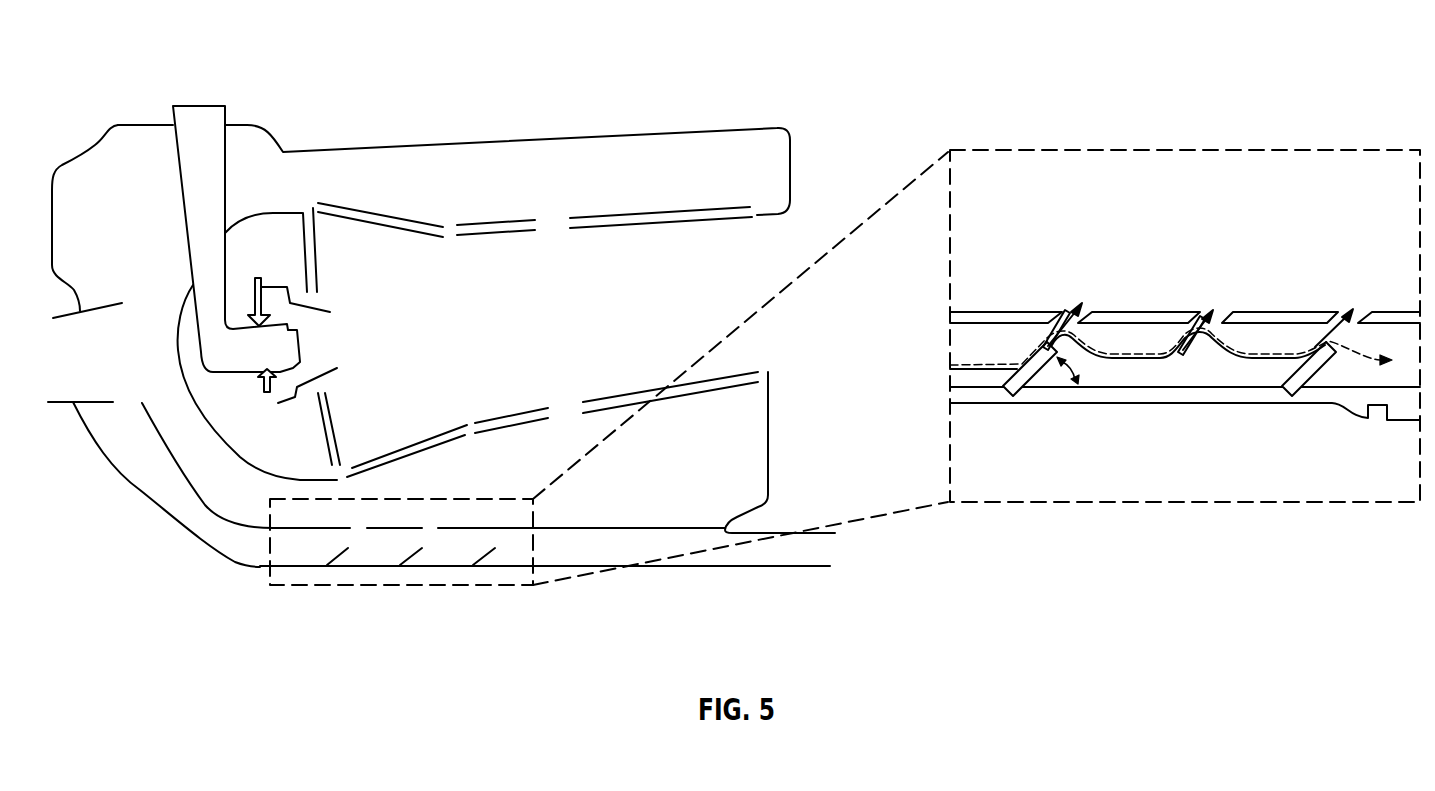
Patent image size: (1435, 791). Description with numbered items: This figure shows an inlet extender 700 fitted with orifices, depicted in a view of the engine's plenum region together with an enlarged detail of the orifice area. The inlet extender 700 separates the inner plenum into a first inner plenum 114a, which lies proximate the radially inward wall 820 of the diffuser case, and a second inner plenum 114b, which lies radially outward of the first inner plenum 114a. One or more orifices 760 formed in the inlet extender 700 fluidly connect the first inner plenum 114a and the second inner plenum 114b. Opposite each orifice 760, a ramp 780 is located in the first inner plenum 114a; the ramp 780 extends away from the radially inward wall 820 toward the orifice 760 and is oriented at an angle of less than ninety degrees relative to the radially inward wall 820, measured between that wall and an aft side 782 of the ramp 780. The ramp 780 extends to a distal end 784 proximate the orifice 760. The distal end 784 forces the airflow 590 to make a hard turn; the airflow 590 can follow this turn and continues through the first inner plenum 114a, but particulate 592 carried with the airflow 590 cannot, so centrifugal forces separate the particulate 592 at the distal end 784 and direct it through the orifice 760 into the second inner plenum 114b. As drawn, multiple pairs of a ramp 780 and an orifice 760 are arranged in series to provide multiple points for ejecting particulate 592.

The first inner plenum 114a is at (253, 556).
The second inner plenum 114b is at (527, 488).
The inlet extender 700 is at (590, 527).
The orifice 760 is at (358, 506).
The ramp 780 is at (335, 562).
The aft side 782 is at (1038, 375).
The distal end 784 is at (1195, 353).
The radially inward wall 820 is at (605, 565).
The airflow 590 is at (1368, 360).
The particulate 592 is at (1190, 325).